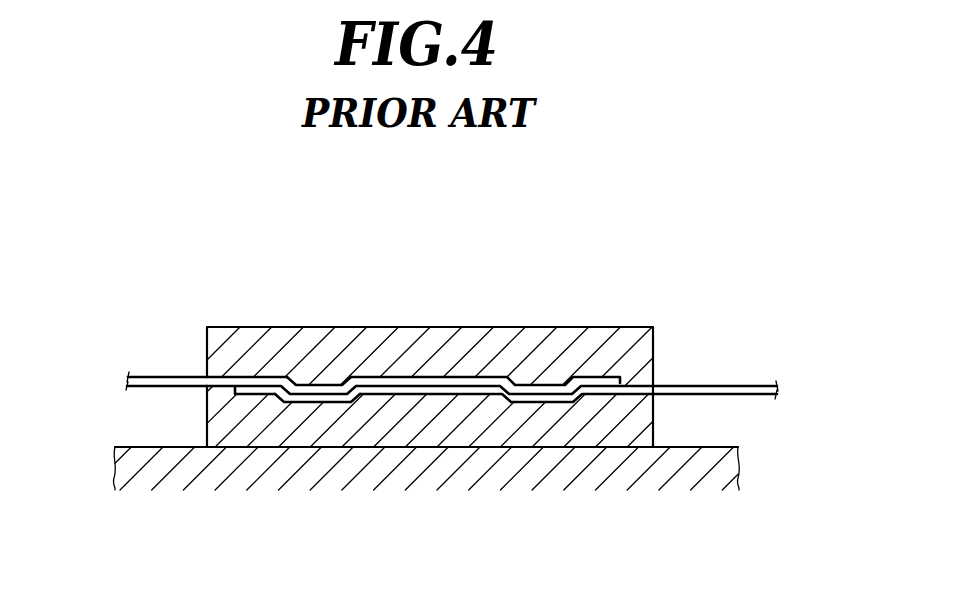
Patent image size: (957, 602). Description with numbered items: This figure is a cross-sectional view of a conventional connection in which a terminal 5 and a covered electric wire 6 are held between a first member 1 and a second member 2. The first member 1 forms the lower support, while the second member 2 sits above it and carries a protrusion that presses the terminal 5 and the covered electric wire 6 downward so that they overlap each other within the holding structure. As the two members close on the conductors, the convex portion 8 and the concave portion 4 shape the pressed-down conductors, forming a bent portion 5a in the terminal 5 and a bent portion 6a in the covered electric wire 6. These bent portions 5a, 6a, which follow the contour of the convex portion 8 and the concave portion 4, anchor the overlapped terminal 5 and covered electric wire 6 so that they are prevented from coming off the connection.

The first member 1 is at (655, 427).
The second member 2 is at (586, 335).
The concave portion 4 is at (318, 401).
The terminal 5 is at (723, 382).
The bent portion 5a is at (540, 397).
The covered electric wire 6 is at (160, 380).
The bent portion 6a is at (535, 383).
The convex portion 8 is at (332, 383).